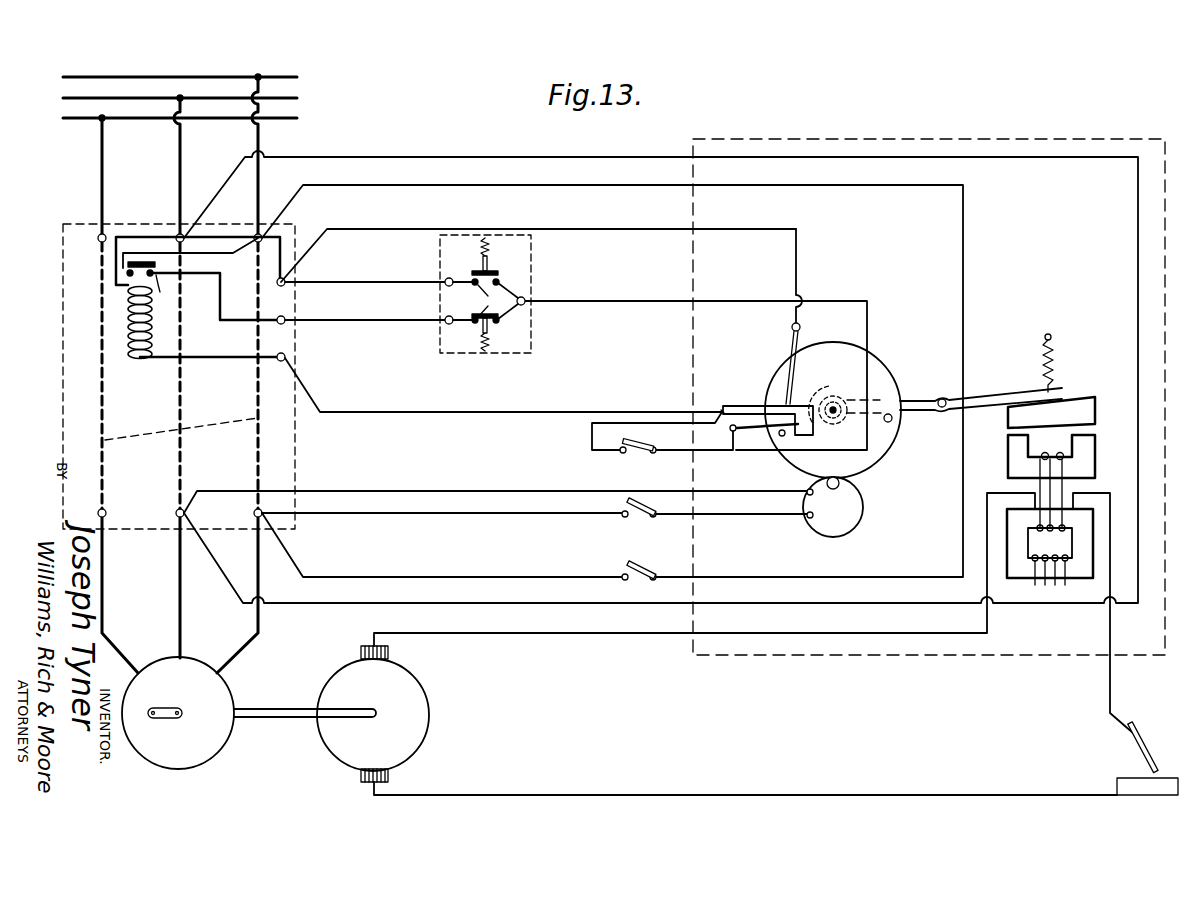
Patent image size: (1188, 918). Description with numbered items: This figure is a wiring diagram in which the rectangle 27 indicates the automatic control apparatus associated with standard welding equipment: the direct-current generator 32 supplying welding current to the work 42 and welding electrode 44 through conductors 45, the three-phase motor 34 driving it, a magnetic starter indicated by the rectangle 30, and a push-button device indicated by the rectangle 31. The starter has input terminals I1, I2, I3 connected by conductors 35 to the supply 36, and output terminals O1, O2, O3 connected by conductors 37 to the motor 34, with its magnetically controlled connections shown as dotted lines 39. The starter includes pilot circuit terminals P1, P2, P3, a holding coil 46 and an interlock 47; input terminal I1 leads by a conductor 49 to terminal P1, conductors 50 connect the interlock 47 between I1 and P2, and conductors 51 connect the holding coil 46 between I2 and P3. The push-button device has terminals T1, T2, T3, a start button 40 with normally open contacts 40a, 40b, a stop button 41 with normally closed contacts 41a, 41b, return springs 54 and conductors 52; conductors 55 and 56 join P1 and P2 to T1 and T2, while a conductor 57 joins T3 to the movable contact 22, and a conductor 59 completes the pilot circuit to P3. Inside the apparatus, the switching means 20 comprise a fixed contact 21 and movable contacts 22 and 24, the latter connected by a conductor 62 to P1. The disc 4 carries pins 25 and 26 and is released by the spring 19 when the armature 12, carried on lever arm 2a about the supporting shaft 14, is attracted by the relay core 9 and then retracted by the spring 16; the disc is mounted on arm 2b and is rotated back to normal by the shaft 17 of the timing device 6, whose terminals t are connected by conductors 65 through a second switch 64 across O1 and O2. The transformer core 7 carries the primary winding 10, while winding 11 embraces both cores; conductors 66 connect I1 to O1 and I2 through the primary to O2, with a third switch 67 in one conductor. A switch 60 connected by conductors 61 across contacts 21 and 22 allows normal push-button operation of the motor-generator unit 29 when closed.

The 3-phase alternating-current supply 36 is at (143, 118).
The conductors 35 is at (258, 135).
The conductors 37 is at (258, 612).
The magnetic starter 30 is at (63, 380).
The circuit connections 39 is at (175, 426).
The input terminal I1 is at (255, 233).
The input terminal I2 is at (178, 233).
The input terminal I3 is at (100, 233).
The output terminal O1 is at (254, 511).
The output terminal O2 is at (177, 510).
The output terminal O3 is at (99, 510).
The conductors 51 is at (116, 262).
The conductors 50 is at (233, 255).
The interlock 47 is at (162, 292).
The holding coil 46 is at (134, 359).
The pilot circuit terminal P1 is at (286, 280).
The pilot circuit terminal P2 is at (286, 319).
The pilot circuit terminal P3 is at (286, 357).
The conductor 49 is at (288, 250).
The conductor 62 is at (602, 229).
The conductor 55 is at (380, 282).
The conductor 56 is at (382, 320).
The conductor 59 is at (567, 412).
The conductor 57 is at (623, 301).
The push-button device 31 is at (533, 283).
The terminal T1 is at (445, 279).
The terminal T2 is at (445, 321).
The terminal T3 is at (525, 304).
The springs 54 is at (485, 238).
The start button 40 is at (489, 268).
The start-button contact 40a is at (474, 279).
The start-button contact 40b is at (499, 281).
The stop button 41 is at (490, 336).
The stop-button contact 41a is at (474, 323).
The stop-button contact 41b is at (499, 322).
The conductors 52 is at (493, 299).
The conductors 66 is at (600, 165).
The third switch 67 is at (642, 577).
The conductors 65 is at (490, 503).
The second switch 64 is at (642, 514).
The control apparatus 27 is at (822, 139).
The conductors 61 is at (680, 423).
The switch 60 is at (638, 450).
The fixed contact 21 is at (750, 406).
The switching means 20 is at (722, 410).
The movable contact 22 is at (738, 432).
The pin 25 is at (785, 437).
The movable contact 24 is at (790, 344).
The disc 4 is at (884, 375).
The spring 19 is at (830, 393).
The pivotal arm 2b is at (922, 415).
The pin 26 is at (888, 423).
The pivotal arm 2a is at (984, 395).
The supporting shaft 14 is at (942, 398).
The spring 16 is at (1053, 364).
The armature 12 is at (1096, 409).
The relay core 9 is at (1096, 455).
The winding 11 is at (1030, 535).
The winding 10 is at (1047, 590).
The transformer core 7 is at (1077, 580).
The electric timing device 6 is at (860, 524).
The shaft 17 is at (836, 490).
The timer terminals t is at (806, 514).
The conductors 45 is at (540, 633).
The welding electrode 44 is at (1150, 755).
The work 42 is at (1123, 778).
The 3-phase motor 34 is at (198, 755).
The motor-generator unit 29 is at (283, 728).
The direct-current generator 32 is at (428, 719).